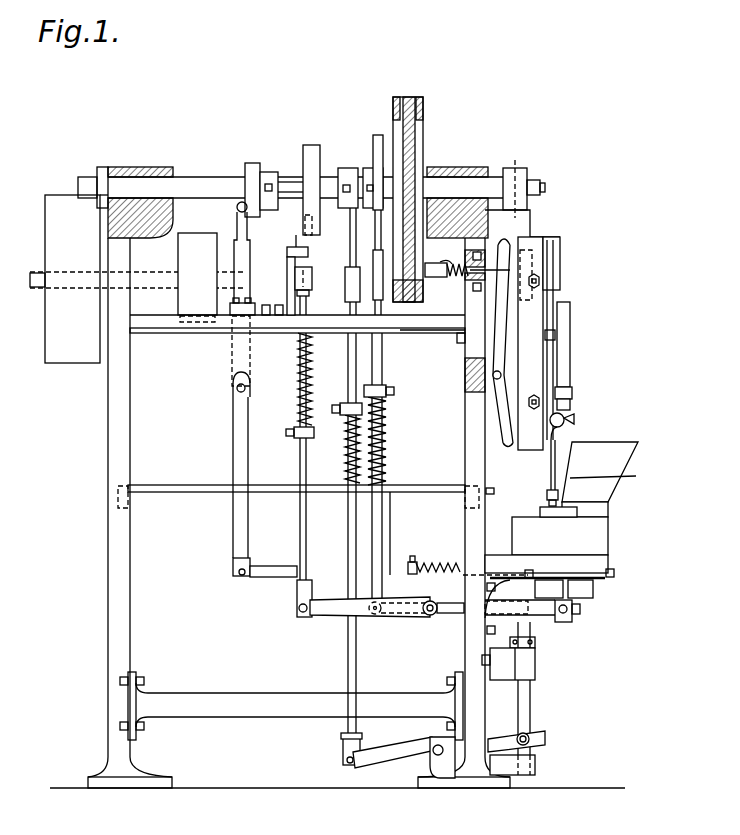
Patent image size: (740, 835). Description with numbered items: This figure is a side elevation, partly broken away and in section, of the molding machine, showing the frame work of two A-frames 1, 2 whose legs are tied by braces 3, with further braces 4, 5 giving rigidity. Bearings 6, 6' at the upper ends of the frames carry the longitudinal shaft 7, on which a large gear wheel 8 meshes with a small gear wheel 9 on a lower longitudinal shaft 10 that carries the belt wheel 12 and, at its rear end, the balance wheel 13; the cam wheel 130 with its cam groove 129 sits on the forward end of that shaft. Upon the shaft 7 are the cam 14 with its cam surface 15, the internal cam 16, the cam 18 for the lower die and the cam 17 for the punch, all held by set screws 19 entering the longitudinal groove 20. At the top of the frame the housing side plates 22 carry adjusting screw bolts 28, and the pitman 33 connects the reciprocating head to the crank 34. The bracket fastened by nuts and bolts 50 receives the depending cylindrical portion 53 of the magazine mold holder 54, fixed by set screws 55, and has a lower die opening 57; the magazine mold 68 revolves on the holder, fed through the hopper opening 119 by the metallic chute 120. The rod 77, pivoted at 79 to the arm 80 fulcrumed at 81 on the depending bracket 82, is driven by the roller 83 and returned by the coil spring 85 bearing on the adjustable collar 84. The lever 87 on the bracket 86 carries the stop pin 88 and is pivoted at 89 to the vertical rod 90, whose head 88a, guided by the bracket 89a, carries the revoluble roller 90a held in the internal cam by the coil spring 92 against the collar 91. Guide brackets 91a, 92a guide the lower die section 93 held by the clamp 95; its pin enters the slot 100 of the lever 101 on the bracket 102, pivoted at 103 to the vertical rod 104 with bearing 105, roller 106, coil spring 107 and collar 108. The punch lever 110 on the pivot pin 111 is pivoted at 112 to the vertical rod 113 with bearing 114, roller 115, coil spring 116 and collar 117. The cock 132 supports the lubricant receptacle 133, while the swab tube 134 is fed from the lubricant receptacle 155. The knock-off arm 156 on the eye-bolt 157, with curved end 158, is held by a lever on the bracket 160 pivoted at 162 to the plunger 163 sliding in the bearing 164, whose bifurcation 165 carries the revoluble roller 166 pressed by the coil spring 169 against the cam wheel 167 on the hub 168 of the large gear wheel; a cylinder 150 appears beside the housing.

The A-frame 1 is at (108, 404).
The A-frame 2 is at (465, 460).
The braces 3 is at (291, 706).
The brace 4 is at (180, 492).
The brace 5 is at (220, 326).
The bearings 6 is at (140, 186).
The bearing 6' is at (463, 189).
The longitudinal shaft 7 is at (198, 176).
The large gear wheel 8 is at (423, 108).
The small gear wheel 9 is at (411, 302).
The longitudinal shaft 10 is at (152, 280).
The belt wheel 12 is at (197, 277).
The balance wheel 13 is at (76, 279).
The cam 14 is at (270, 172).
The cam surface 15 is at (247, 163).
The internal cam 16 is at (314, 145).
The cam 17 is at (377, 135).
The cam 18 is at (347, 168).
The set screws 19 is at (268, 192).
The longitudinal groove 20 is at (297, 186).
The side plates 22 is at (530, 343).
The screw bolts 28 is at (540, 282).
The pitman 33 is at (532, 222).
The crank 34 is at (520, 176).
The nuts and bolts 50 is at (480, 605).
The depending cylindrical portion 53 is at (560, 598).
The magazine mold holder 54 is at (608, 566).
The set screws 55 is at (527, 570).
The lower die opening 57 is at (593, 587).
The magazine mold 68 is at (560, 531).
The rod 77 is at (394, 533).
The pivotal connection 79 is at (240, 575).
The arm 80 is at (240, 460).
The fulcrum 81 is at (233, 390).
The depending bracket 82 is at (250, 358).
The roller 83 is at (237, 207).
The adjustable collar 84 is at (418, 564).
The coil spring 85 is at (440, 603).
The bracket 86 is at (447, 617).
The lever 87 is at (330, 617).
The stop pin 88 is at (545, 620).
The head 88a is at (312, 270).
The pivotal connection 89 is at (298, 612).
The bracket 89a is at (287, 252).
The vertical rod 90 is at (306, 525).
The revoluble roller 90a is at (314, 226).
The collar 91 is at (298, 438).
The guide bracket 91a is at (535, 672).
The coil spring 92 is at (312, 370).
The guide bracket 92a is at (535, 764).
The section 93 is at (531, 714).
The clamp 95 is at (535, 645).
The slot 100 is at (546, 738).
The lever 101 is at (398, 760).
The bracket 102 is at (445, 772).
The pivotal connection 103 is at (343, 762).
The vertical rod 104 is at (356, 680).
The bearing 105 is at (345, 300).
The revoluble roller 106 is at (378, 250).
The coil spring 107 is at (345, 455).
The collar 108 is at (342, 403).
The lever 110 is at (410, 617).
The pivot pin 111 is at (426, 600).
The pivotal connection 112 is at (373, 614).
The vertical rod 113 is at (382, 523).
The bearing 114 is at (297, 322).
The revoluble roller 115 is at (444, 258).
The coil spring 116 is at (386, 454).
The collar 117 is at (392, 392).
The opening 119 is at (608, 505).
The metallic chute 120 is at (600, 472).
The cam groove 129 is at (555, 270).
The cam wheel 130 is at (545, 245).
The cock 132 is at (565, 414).
The lubricant receptacle 133 is at (570, 360).
The tube 134 is at (622, 474).
The cylinder 150 is at (570, 310).
The lubricant receptacle 155 is at (558, 262).
The arm 156 is at (547, 496).
The eye-bolt 157 is at (490, 496).
The curved end 158 is at (558, 470).
The bracket 160 is at (502, 376).
The pivotal connection 162 is at (533, 255).
The plunger 163 is at (458, 276).
The bearing 164 is at (476, 292).
The bifurcation 165 is at (445, 263).
The revoluble roller 166 is at (440, 318).
The cam wheel 167 is at (420, 168).
The hub 168 is at (428, 172).
The coil spring 169 is at (512, 164).